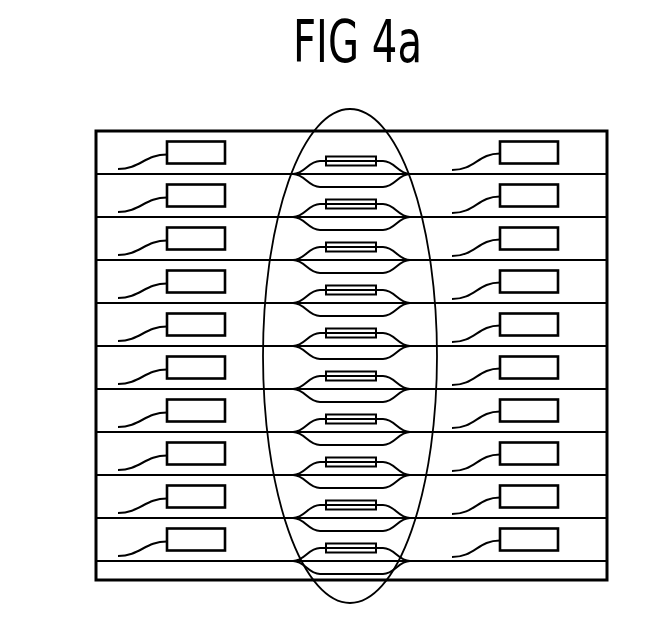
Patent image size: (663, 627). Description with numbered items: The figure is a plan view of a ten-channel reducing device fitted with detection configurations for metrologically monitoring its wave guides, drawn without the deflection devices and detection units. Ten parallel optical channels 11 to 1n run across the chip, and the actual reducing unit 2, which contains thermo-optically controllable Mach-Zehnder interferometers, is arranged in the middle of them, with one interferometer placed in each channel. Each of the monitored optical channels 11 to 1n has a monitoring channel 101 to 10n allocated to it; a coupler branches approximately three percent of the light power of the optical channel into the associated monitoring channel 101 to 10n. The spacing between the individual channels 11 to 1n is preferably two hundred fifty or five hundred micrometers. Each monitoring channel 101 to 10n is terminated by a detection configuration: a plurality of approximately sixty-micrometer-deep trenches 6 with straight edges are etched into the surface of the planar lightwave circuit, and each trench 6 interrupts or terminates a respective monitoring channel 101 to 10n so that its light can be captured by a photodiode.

The reducing unit 2 is at (327, 118).
The optical channel 11 is at (107, 175).
The optical channel 1n is at (96, 561).
The monitoring channel 101 is at (165, 155).
The monitoring channel 10n is at (140, 540).
The trench 6 is at (193, 148).